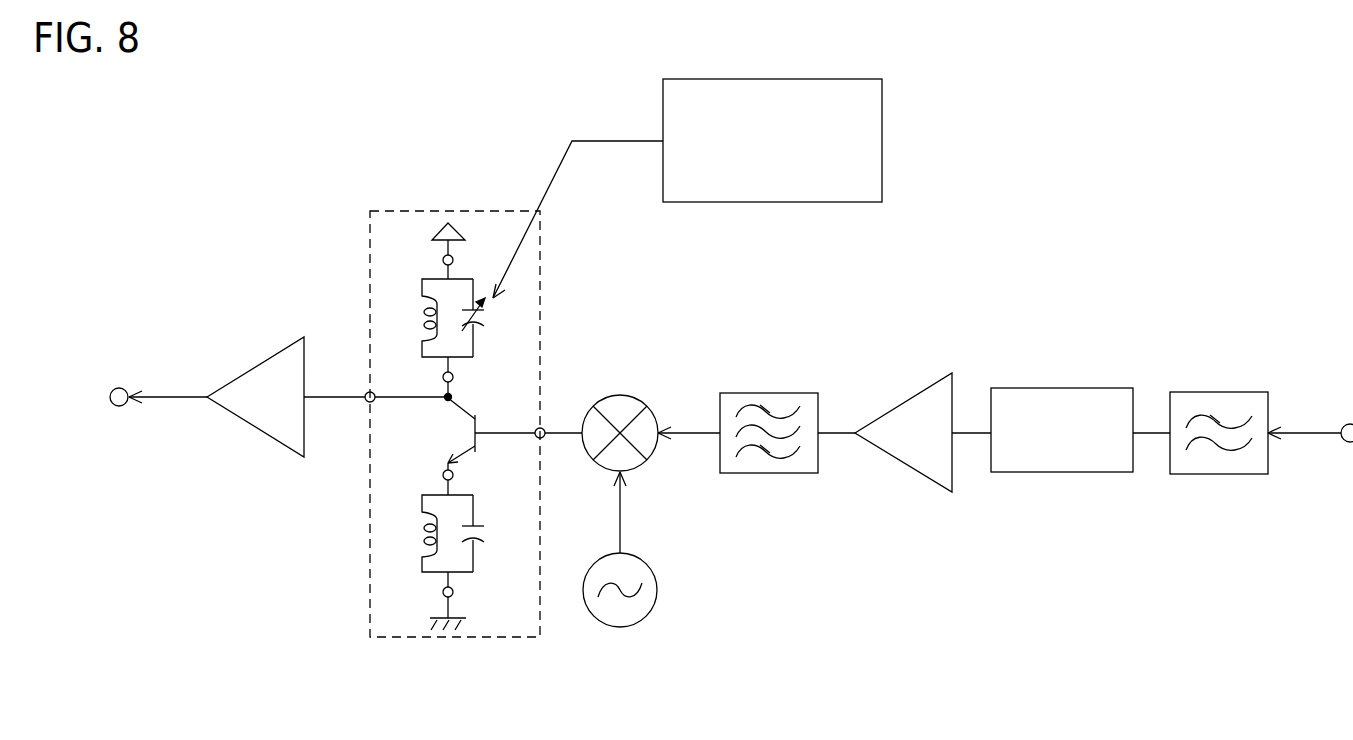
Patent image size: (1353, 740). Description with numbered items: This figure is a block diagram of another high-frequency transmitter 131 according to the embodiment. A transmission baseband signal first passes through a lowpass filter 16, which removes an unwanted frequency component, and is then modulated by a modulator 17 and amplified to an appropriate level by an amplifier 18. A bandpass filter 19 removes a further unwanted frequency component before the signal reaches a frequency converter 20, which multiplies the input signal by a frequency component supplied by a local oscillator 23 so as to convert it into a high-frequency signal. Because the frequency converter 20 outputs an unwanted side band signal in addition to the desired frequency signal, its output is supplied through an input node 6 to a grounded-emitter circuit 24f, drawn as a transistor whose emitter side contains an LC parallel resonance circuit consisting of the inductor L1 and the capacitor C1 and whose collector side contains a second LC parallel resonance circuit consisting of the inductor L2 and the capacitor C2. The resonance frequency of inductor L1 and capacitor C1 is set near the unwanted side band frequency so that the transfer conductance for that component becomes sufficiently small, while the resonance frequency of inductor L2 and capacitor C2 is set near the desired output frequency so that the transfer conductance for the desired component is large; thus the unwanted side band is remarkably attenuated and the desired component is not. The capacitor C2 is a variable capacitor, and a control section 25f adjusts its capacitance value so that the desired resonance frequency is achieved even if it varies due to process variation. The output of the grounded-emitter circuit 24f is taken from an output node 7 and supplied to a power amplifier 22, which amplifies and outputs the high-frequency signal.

The high-frequency transmitter 131 is at (242, 193).
The grounded-emitter circuit 24f is at (416, 208).
The control section 25f is at (882, 141).
The power amplifier 22 is at (250, 368).
The output node 7 is at (363, 412).
The input node 6 is at (548, 420).
The frequency converter 20 is at (620, 395).
The local oscillator 23 is at (657, 590).
The bandpass filter 19 is at (770, 393).
The amplifier 18 is at (906, 396).
The modulator 17 is at (1080, 388).
The lowpass filter 16 is at (1222, 392).
The inductor L1 is at (431, 533).
The inductor L2 is at (431, 318).
The capacitor C1 is at (493, 533).
The variable capacitor C2 is at (493, 318).